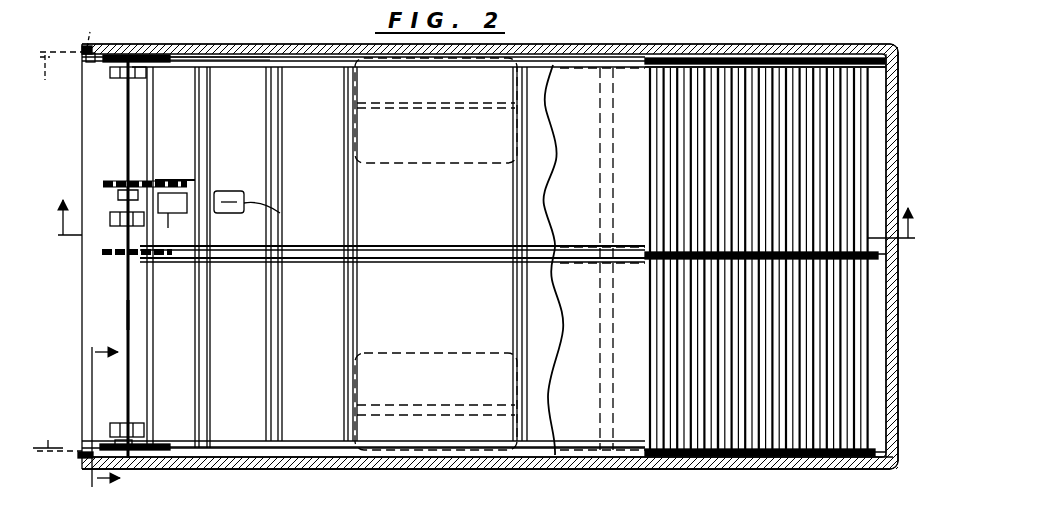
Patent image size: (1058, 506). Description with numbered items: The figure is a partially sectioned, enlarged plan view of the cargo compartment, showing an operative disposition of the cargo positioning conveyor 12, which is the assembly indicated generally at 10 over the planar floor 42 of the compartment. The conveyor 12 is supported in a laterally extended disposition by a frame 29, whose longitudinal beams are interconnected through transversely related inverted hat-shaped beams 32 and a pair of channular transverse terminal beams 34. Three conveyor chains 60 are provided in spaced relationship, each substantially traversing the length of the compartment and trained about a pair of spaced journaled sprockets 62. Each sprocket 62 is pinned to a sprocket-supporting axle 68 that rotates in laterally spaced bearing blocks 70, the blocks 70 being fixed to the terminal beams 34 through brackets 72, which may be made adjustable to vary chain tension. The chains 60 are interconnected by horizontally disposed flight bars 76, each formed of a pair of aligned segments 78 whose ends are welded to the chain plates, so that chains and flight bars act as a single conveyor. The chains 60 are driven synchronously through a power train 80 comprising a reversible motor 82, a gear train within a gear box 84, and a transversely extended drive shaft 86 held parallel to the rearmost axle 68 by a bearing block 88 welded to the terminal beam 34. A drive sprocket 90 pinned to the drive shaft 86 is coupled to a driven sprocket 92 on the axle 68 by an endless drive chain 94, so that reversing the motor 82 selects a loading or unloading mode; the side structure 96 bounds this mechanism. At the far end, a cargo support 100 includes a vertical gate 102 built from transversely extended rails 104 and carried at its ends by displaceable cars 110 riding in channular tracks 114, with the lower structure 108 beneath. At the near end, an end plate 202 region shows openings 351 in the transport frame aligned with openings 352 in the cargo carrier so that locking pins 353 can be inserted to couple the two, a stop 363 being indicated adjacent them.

The heating apparatus direction 10 is at (98, 414).
The cargo positioning conveyor 12 is at (652, 50).
The frame 29 is at (767, 50).
The inverted hat-shaped beams 32 is at (345, 160).
The transverse terminal beams 34 is at (148, 120).
The planar floor 42 is at (590, 119).
The chain 60 is at (683, 56).
The sprockets 62 is at (132, 262).
The sprocket-supporting axle 68 is at (126, 307).
The bearing blocks 70 is at (113, 78).
The brackets 72 is at (146, 55).
The flight bars 76 is at (645, 190).
The aligned segments 78 is at (740, 56).
The power train 80 is at (214, 190).
The reversible motor 82 is at (280, 216).
The gear box 84 is at (645, 235).
The drive shaft 86 is at (127, 163).
The bearing block 88 is at (182, 172).
The drive sprocket 90 is at (186, 140).
The driven sprocket 92 is at (121, 193).
The endless drive chain 94 is at (112, 183).
The side wall 96 is at (90, 290).
The cargo support 100 is at (870, 206).
The vertical gate 102 is at (868, 170).
The transverse rails 104 is at (444, 496).
The base 108 is at (502, 487).
The displaceable cars 110 is at (860, 52).
The channular track 114 is at (572, 55).
The end plate 202 is at (48, 80).
The openings 351 is at (102, 46).
The openings 352 is at (82, 48).
The locking pins 353 is at (100, 23).
The stop 363 is at (95, 492).